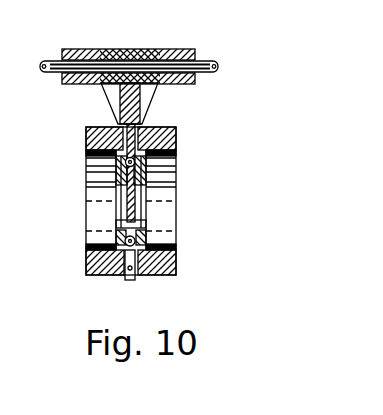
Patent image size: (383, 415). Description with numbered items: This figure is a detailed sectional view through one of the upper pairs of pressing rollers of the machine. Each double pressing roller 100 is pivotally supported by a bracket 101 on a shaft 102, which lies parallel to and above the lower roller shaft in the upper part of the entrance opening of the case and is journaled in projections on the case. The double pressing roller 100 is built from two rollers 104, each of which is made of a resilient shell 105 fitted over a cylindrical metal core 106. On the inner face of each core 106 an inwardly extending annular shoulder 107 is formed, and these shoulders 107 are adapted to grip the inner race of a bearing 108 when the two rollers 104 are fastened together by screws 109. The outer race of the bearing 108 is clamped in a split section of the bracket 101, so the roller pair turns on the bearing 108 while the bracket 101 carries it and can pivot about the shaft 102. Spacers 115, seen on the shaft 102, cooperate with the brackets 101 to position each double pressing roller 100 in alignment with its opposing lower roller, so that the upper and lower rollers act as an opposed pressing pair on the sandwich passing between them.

The double pressing rollers 100 is at (206, 172).
The bracket 101 is at (141, 101).
The shaft 102 is at (216, 63).
The rollers 104 is at (80, 134).
The resilient shell 105 is at (177, 270).
The cylindrical metal core 106 is at (174, 252).
The annular shoulder 107 is at (124, 166).
The bearing 108 is at (118, 241).
The screws 109 is at (116, 224).
The spacers 115 is at (79, 49).